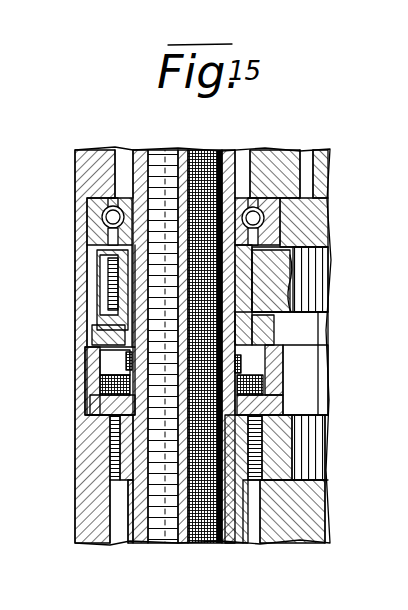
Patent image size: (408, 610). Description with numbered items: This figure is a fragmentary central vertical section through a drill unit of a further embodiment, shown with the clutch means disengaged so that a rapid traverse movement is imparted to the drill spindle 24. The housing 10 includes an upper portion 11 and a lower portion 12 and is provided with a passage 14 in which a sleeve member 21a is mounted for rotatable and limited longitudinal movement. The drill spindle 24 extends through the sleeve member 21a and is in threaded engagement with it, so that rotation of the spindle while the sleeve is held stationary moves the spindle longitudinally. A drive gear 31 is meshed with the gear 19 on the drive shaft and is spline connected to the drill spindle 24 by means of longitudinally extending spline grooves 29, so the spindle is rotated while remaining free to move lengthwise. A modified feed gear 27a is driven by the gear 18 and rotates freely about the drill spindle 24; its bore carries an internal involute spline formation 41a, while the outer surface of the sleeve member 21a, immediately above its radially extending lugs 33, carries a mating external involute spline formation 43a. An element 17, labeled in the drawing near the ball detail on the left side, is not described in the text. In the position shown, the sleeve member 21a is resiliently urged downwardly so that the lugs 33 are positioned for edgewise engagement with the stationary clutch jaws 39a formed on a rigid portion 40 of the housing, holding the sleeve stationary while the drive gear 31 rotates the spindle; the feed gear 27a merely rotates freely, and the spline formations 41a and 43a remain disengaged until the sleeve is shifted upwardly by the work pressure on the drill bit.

The housing 10 is at (91, 146).
The upper portion 11 is at (80, 175).
The lower portion 12 is at (314, 540).
The passage 14 is at (128, 152).
The ball 17 is at (109, 221).
The gear 18 is at (320, 262).
The gear 19 is at (318, 452).
The sleeve member 21a is at (241, 152).
The drill spindle 24 is at (205, 544).
The feed gear 27a is at (117, 263).
The spline grooves 29 is at (190, 520).
The drive gear 31 is at (110, 458).
The lugs 33 is at (128, 372).
The stationary clutch jaws 39a is at (80, 400).
The rigid portion 40 is at (78, 392).
The internal involute spline formation 41a is at (130, 303).
The external involute spline formation 43a is at (85, 358).